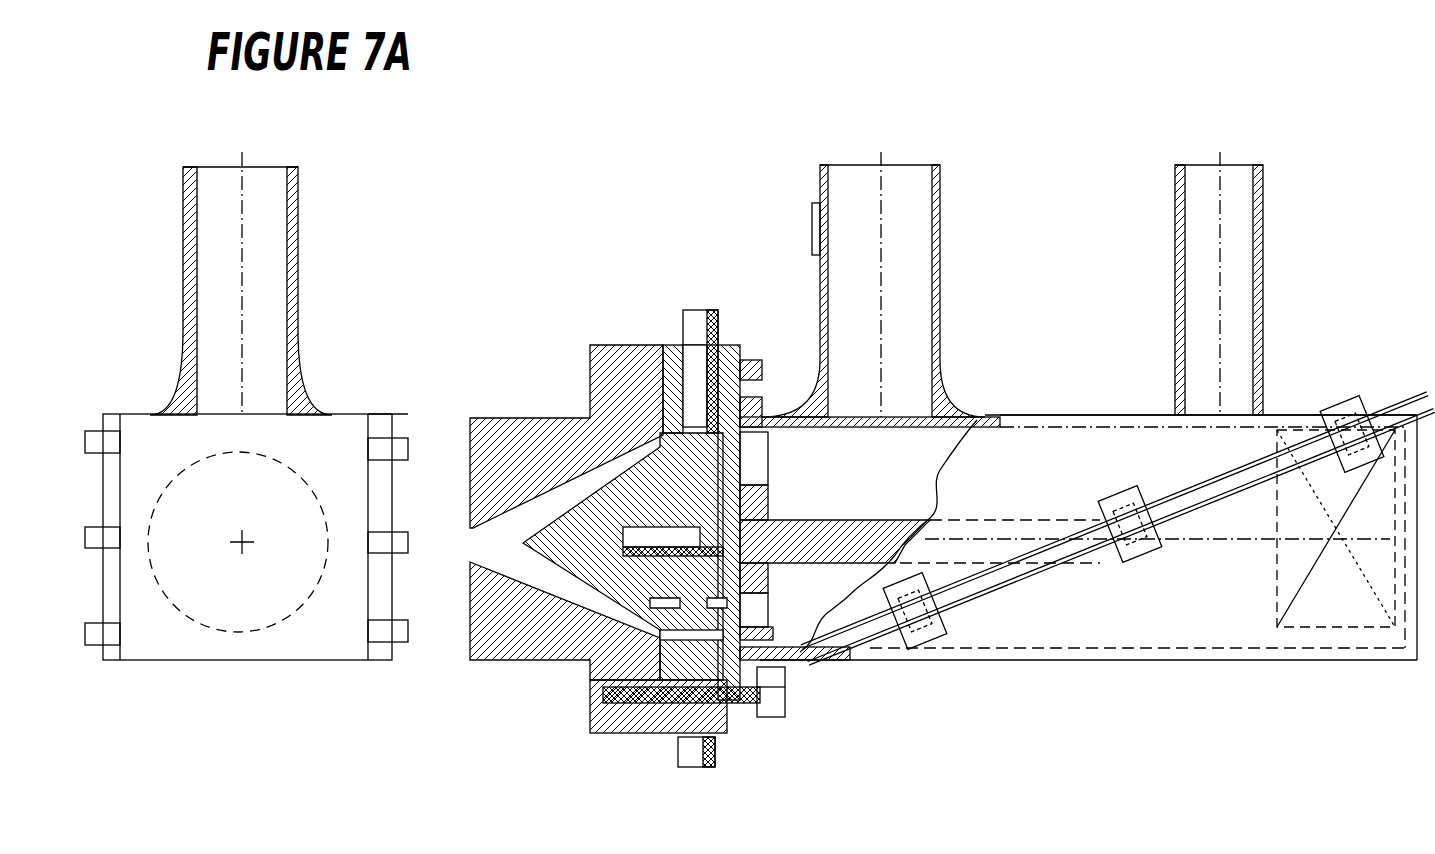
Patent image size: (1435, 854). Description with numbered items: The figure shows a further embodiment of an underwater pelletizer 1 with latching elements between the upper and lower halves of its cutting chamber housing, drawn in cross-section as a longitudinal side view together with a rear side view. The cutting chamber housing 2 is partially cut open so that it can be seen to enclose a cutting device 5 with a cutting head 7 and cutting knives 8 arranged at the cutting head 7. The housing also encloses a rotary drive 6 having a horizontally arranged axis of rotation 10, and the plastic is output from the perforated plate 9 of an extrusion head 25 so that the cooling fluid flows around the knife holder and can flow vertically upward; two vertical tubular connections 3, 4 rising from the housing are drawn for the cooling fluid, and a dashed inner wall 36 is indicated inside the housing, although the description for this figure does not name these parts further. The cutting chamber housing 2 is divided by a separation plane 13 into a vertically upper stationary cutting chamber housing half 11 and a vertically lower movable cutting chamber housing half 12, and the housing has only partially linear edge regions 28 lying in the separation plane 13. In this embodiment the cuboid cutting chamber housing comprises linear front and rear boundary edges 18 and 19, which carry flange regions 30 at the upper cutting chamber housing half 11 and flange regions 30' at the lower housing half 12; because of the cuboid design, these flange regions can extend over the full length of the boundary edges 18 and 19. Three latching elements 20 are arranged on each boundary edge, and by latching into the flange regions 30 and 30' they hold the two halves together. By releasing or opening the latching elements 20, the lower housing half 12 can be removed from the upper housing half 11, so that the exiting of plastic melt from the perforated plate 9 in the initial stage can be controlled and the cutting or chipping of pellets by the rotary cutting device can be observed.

The underwater pelletizer 1 is at (1332, 173).
The cutting chamber housing 2 is at (1265, 412).
The inlet tube 3 is at (282, 206).
The outlet tube 4 is at (300, 356).
The cutting device 5 is at (780, 520).
The rotary drive 6 is at (230, 627).
The cutting head 7 is at (770, 580).
The cutting knives 8 is at (768, 462).
The perforated plate 9 is at (672, 352).
The axis of rotation 10 is at (975, 540).
The upper stationary cutting chamber housing half 11 is at (1005, 440).
The lower movable cutting chamber housing half 12 is at (1205, 632).
The separation plane 13 is at (1045, 545).
The front boundary edge 18 is at (366, 443).
The rear boundary edge 19 is at (120, 453).
The latching elements 20 is at (100, 653).
The extrusion head 25 is at (533, 650).
The linear edge regions 28 is at (395, 450).
The flange regions at the upper housing half 30 is at (643, 545).
The flange regions at the lower housing half 30' is at (809, 546).
The inner wall 36 is at (1388, 632).